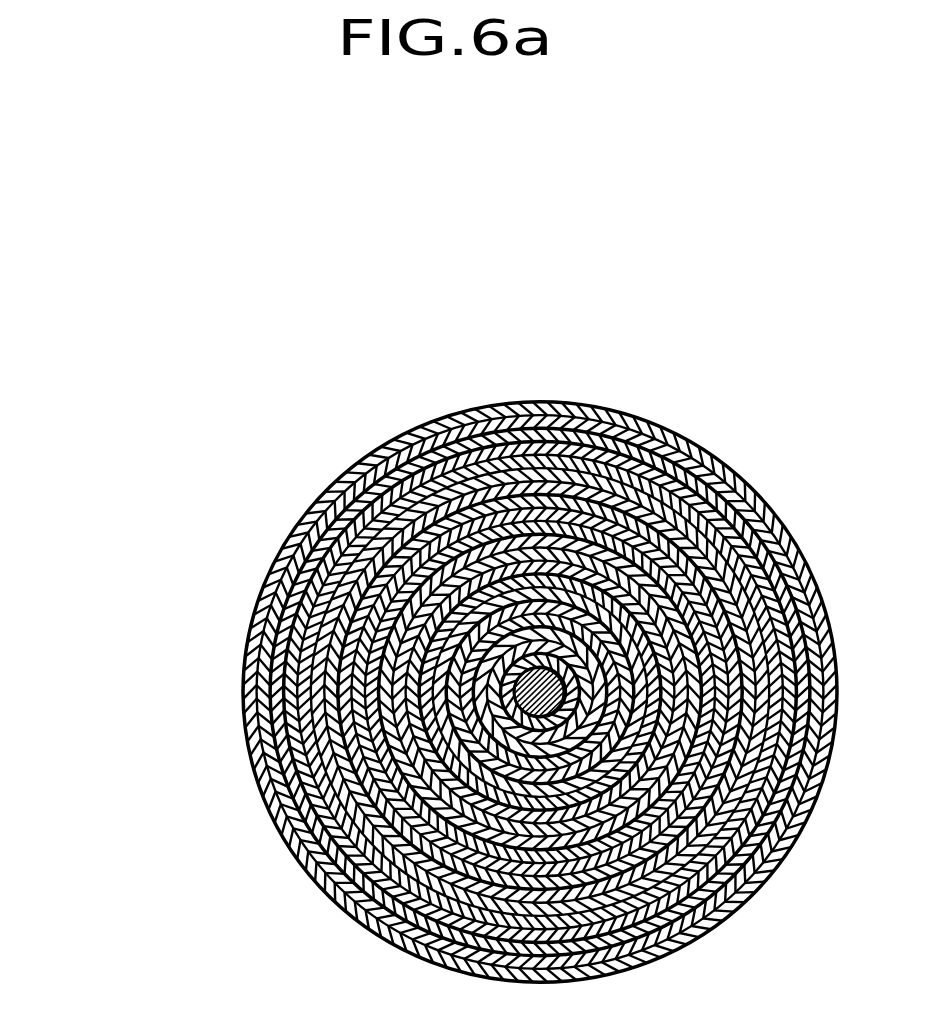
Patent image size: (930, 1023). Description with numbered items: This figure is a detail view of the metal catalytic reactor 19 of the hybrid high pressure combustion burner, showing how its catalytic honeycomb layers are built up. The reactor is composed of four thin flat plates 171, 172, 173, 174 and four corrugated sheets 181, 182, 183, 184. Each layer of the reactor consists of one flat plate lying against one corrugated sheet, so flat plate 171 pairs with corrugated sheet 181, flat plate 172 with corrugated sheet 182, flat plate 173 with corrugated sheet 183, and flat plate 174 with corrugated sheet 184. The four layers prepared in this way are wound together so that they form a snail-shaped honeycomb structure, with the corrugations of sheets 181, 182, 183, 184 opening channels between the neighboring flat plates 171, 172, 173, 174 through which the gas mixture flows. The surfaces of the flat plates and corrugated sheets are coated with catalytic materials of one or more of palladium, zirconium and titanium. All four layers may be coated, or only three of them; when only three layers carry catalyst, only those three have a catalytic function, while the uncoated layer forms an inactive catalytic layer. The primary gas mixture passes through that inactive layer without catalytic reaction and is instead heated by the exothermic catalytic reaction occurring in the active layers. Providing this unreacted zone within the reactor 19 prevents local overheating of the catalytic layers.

The braided conductive cable 19 is at (470, 687).
The thin flat plate 171 is at (363, 452).
The thin flat plate 172 is at (300, 517).
The thin flat plate 173 is at (277, 580).
The thin flat plate 174 is at (245, 643).
The corrugated sheet 181 is at (267, 822).
The corrugated sheet 182 is at (313, 878).
The corrugated sheet 183 is at (360, 923).
The corrugated sheet 184 is at (427, 962).